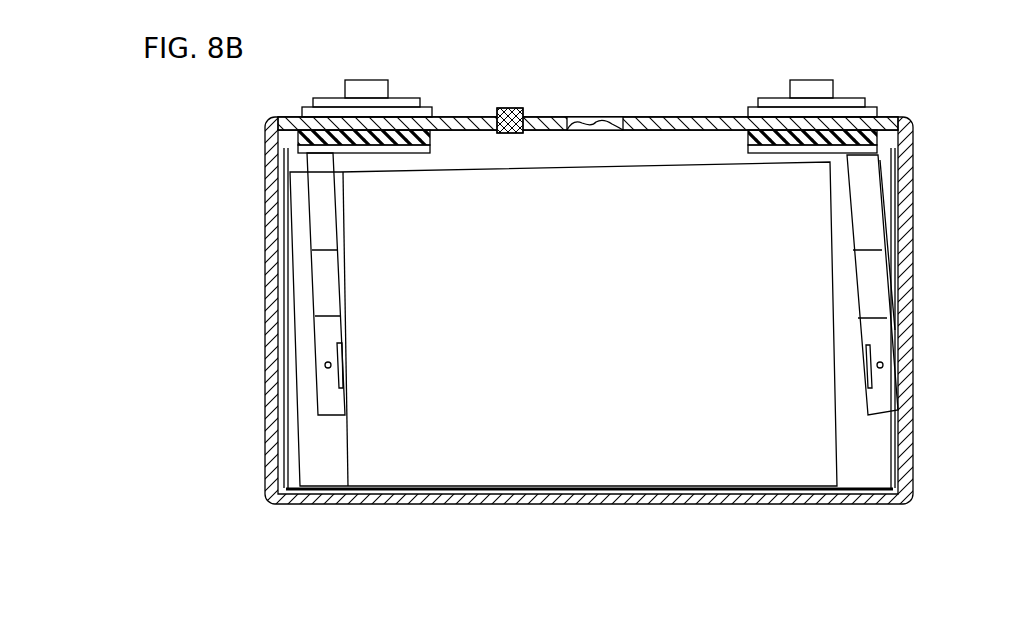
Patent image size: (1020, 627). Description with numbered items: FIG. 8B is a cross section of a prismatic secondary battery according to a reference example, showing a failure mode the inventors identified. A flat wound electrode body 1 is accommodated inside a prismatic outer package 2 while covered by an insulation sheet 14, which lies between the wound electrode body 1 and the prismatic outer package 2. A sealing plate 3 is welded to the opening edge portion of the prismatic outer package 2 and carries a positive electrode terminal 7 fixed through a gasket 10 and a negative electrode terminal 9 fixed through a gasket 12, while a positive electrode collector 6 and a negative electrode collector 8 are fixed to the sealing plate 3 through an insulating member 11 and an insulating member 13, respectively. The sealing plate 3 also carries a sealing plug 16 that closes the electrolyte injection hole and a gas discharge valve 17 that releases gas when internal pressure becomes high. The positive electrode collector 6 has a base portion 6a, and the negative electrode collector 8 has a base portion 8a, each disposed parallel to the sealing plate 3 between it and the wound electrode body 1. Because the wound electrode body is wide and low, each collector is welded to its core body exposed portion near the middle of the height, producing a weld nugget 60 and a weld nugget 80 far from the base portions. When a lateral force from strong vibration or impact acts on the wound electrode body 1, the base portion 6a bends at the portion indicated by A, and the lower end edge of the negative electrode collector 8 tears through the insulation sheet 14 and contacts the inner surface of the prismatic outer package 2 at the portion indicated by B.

The wound electrode body 1 is at (446, 460).
The prismatic outer package 2 is at (668, 505).
The sealing plate 3 is at (688, 124).
The positive electrode collector 6 is at (318, 215).
The base portion 6a is at (420, 140).
The positive electrode terminal 7 is at (378, 88).
The negative electrode collector 8 is at (862, 205).
The base portion 8a is at (770, 138).
The negative electrode terminal 9 is at (806, 88).
The gasket 10 is at (330, 112).
The insulating member 11 is at (410, 135).
The gasket 12 is at (842, 112).
The insulating member 13 is at (778, 138).
The insulation sheet 14 is at (595, 492).
The sealing plug 16 is at (510, 110).
The gas discharge valve 17 is at (598, 120).
The weld nugget 60 is at (325, 365).
The weld nugget 80 is at (885, 365).
The portion A is at (282, 141).
The portion B is at (905, 420).